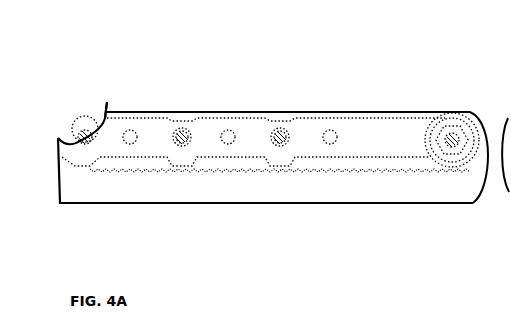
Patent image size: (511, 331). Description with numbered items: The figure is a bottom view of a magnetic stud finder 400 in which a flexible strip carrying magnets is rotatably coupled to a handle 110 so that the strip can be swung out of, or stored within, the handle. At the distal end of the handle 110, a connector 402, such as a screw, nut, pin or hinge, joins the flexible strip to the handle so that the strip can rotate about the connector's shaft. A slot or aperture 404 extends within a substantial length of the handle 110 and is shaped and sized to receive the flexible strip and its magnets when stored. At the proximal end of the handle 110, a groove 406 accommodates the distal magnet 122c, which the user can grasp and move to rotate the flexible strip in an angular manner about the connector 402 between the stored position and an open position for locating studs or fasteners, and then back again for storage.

The magnetic stud finder 400 is at (222, 80).
The connector 402 is at (450, 112).
The slot or aperture 404 is at (327, 180).
The groove 406 is at (106, 102).
The handle 110 is at (215, 207).
The distal magnet 122c is at (75, 112).